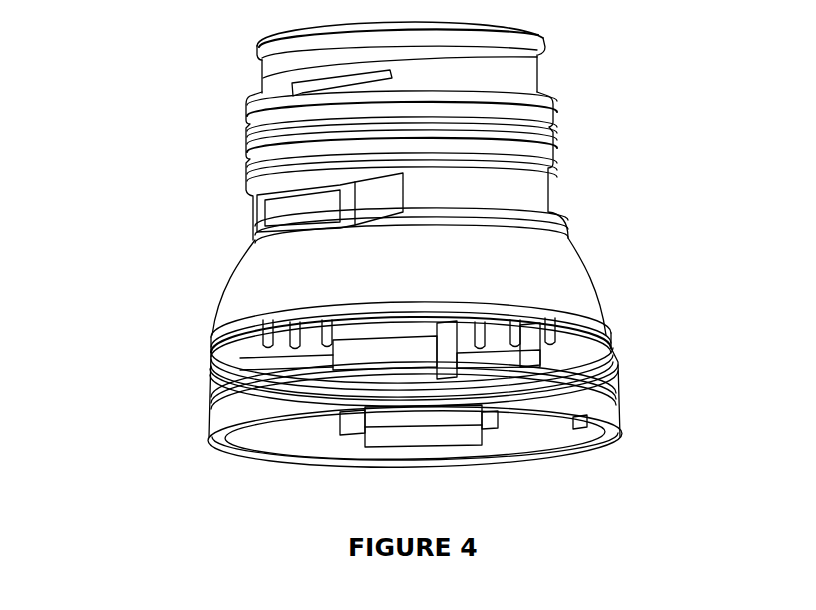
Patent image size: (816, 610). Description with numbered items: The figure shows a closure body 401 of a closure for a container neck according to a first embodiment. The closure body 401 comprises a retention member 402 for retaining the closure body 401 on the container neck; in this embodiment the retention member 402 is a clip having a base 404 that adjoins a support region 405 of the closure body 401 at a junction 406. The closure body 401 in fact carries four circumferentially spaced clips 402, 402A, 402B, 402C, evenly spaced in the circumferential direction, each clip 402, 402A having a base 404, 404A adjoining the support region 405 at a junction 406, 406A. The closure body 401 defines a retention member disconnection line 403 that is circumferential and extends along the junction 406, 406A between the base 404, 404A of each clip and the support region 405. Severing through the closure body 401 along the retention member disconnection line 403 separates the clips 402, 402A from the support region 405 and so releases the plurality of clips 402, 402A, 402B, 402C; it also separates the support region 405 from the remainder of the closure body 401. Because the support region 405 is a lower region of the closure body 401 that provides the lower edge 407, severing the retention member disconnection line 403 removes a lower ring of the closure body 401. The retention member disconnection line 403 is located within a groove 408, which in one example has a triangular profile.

The closure body 401 is at (185, 63).
The retention member 402 is at (240, 380).
The clip 402A is at (565, 365).
The clip 402B is at (505, 425).
The clip 402C is at (317, 423).
The retention member disconnection line 403 is at (220, 403).
The base 404 is at (232, 381).
The base 404A is at (580, 378).
The support region 405 is at (283, 390).
The junction 406 is at (258, 368).
The junction 406A is at (517, 368).
The lower edge 407 is at (600, 425).
The groove 408 is at (250, 396).